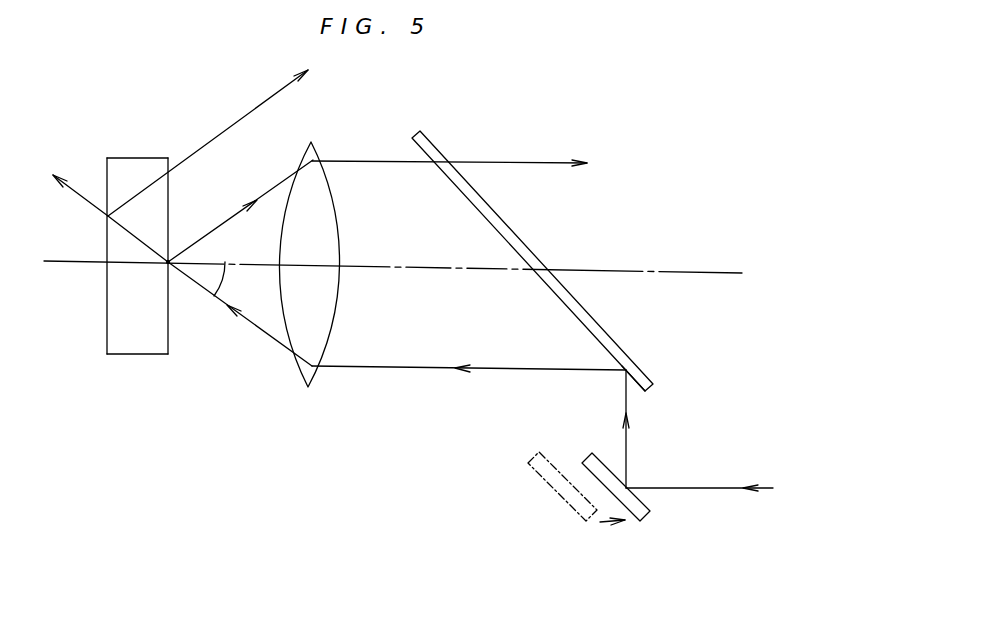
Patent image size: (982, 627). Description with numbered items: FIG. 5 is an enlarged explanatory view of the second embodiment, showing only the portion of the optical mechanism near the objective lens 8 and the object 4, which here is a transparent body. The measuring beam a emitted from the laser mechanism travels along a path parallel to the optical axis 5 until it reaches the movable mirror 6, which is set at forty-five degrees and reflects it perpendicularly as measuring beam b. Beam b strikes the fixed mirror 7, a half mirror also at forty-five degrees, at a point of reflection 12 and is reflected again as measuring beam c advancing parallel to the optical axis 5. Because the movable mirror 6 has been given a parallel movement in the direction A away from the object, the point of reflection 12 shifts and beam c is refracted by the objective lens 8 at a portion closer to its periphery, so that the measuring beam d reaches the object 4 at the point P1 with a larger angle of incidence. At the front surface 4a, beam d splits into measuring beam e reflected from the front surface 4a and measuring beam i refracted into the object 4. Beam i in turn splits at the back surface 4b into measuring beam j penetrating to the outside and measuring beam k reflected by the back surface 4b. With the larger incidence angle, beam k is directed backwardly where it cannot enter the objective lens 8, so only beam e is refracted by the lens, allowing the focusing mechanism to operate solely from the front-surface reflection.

The object 4 is at (134, 249).
The front surface 4a is at (172, 338).
The back surface 4b is at (107, 337).
The optical axis 5 is at (683, 272).
The movable mirror 6 is at (606, 499).
The fixed mirror 7 is at (553, 242).
The objective lens 8 is at (313, 148).
The point of reflection 12 is at (635, 363).
The direction A is at (607, 527).
The measuring beam a is at (720, 487).
The measuring beam b is at (623, 440).
The measuring beam c is at (385, 369).
The measuring beam d is at (261, 331).
The measuring beam e is at (243, 203).
The measuring beam i is at (140, 240).
The measuring beam j is at (90, 215).
The measuring beam k is at (247, 113).
The incident point on surface 4a P1 is at (172, 268).